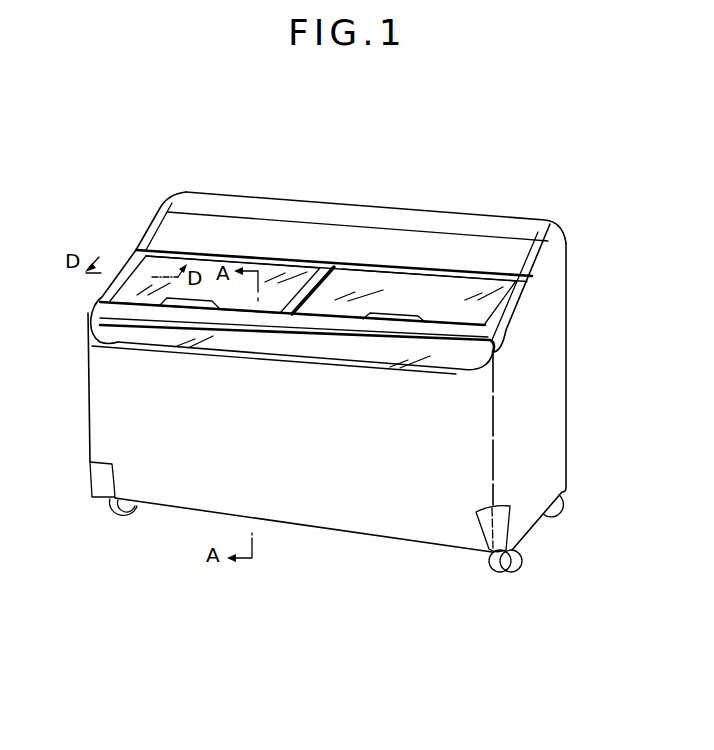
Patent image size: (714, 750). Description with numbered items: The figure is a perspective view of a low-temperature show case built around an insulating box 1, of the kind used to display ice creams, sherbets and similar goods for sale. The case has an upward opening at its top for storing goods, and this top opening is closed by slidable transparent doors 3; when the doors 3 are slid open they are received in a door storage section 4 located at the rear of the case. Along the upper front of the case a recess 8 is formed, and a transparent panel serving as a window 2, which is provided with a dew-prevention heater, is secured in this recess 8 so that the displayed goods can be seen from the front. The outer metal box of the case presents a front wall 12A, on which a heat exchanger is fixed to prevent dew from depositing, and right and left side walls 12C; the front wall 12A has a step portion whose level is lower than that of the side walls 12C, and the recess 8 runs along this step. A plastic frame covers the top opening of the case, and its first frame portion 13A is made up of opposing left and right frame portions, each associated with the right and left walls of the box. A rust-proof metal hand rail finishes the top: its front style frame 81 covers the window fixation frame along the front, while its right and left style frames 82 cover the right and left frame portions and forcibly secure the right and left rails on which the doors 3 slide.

The insulating box 1 is at (363, 427).
The window 2 is at (332, 350).
The slidable transparent doors 3 is at (284, 270).
The door storage section 4 is at (462, 242).
The recess 8 is at (309, 346).
The front wall 12A is at (317, 519).
The side wall 12C is at (541, 379).
The first frame portion 13A is at (287, 361).
The front style frame 81 is at (455, 339).
The style frames 82 is at (95, 298).